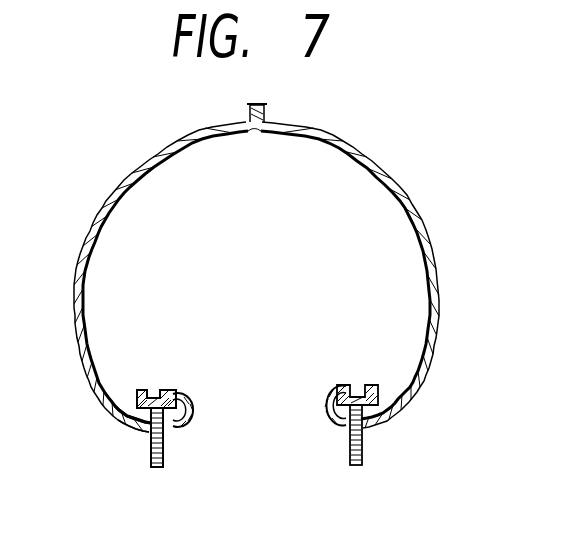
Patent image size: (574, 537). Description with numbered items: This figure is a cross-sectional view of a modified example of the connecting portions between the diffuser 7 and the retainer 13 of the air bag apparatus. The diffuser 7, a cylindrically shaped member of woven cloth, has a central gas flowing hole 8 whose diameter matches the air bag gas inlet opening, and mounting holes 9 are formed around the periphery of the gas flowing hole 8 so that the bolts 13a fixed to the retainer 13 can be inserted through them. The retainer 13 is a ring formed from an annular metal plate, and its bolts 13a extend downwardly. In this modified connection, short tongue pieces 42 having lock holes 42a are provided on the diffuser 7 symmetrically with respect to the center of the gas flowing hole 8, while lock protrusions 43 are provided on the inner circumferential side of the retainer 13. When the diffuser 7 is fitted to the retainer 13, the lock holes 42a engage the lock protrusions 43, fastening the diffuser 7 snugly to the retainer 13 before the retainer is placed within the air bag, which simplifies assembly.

The diffuser 7 is at (383, 167).
The gas flowing hole 8 is at (254, 421).
The mounting holes 9 is at (148, 428).
The retainer 13 is at (140, 390).
The bolts 13a is at (157, 467).
The tongue pieces 42 is at (188, 400).
The lock holes 42a is at (170, 390).
The lock protrusions 43 is at (158, 390).